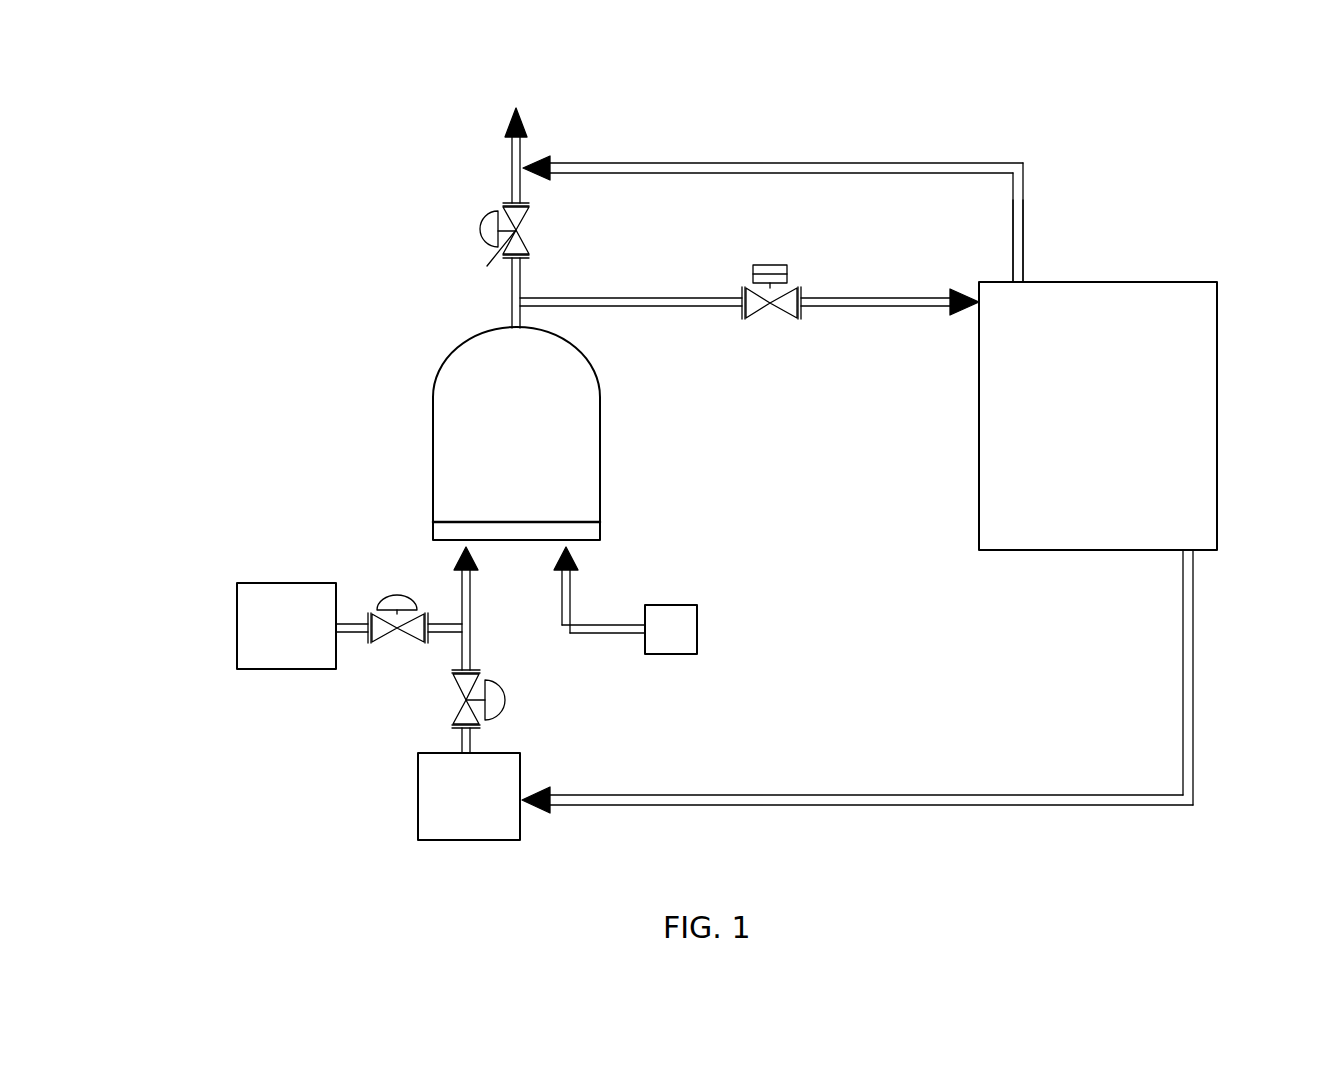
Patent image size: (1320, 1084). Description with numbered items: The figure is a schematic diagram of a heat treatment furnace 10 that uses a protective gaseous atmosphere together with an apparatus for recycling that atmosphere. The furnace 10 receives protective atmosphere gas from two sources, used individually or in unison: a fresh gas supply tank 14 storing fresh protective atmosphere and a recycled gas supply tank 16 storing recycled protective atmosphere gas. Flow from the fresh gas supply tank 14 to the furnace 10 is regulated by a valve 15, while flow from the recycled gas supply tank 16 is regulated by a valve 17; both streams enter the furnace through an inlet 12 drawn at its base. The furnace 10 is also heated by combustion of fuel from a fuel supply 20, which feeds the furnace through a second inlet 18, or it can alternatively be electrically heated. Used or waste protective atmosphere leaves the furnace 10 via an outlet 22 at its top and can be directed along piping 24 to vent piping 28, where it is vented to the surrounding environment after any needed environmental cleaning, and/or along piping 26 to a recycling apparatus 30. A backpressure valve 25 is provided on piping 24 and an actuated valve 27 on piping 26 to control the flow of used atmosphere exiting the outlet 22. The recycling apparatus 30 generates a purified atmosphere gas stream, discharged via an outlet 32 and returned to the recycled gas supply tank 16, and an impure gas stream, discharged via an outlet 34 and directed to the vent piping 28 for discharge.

The heat treatment furnace 10 is at (534, 466).
The first inlet 12 is at (453, 546).
The fresh gas supply tank 14 is at (237, 630).
The valve 15 is at (397, 595).
The recycled gas supply tank 16 is at (418, 797).
The valve 17 is at (505, 700).
The second inlet 18 is at (573, 547).
The fuel supply 20 is at (697, 638).
The outlet 22 is at (512, 326).
The piping 24 is at (512, 278).
The backpressure valve 25 is at (480, 228).
The piping 26 is at (615, 308).
The actuated valve 27 is at (770, 265).
The vent piping 28 is at (512, 143).
The recycling apparatus 30 is at (1113, 424).
The outlet 32 is at (1183, 552).
The outlet 34 is at (1023, 281).